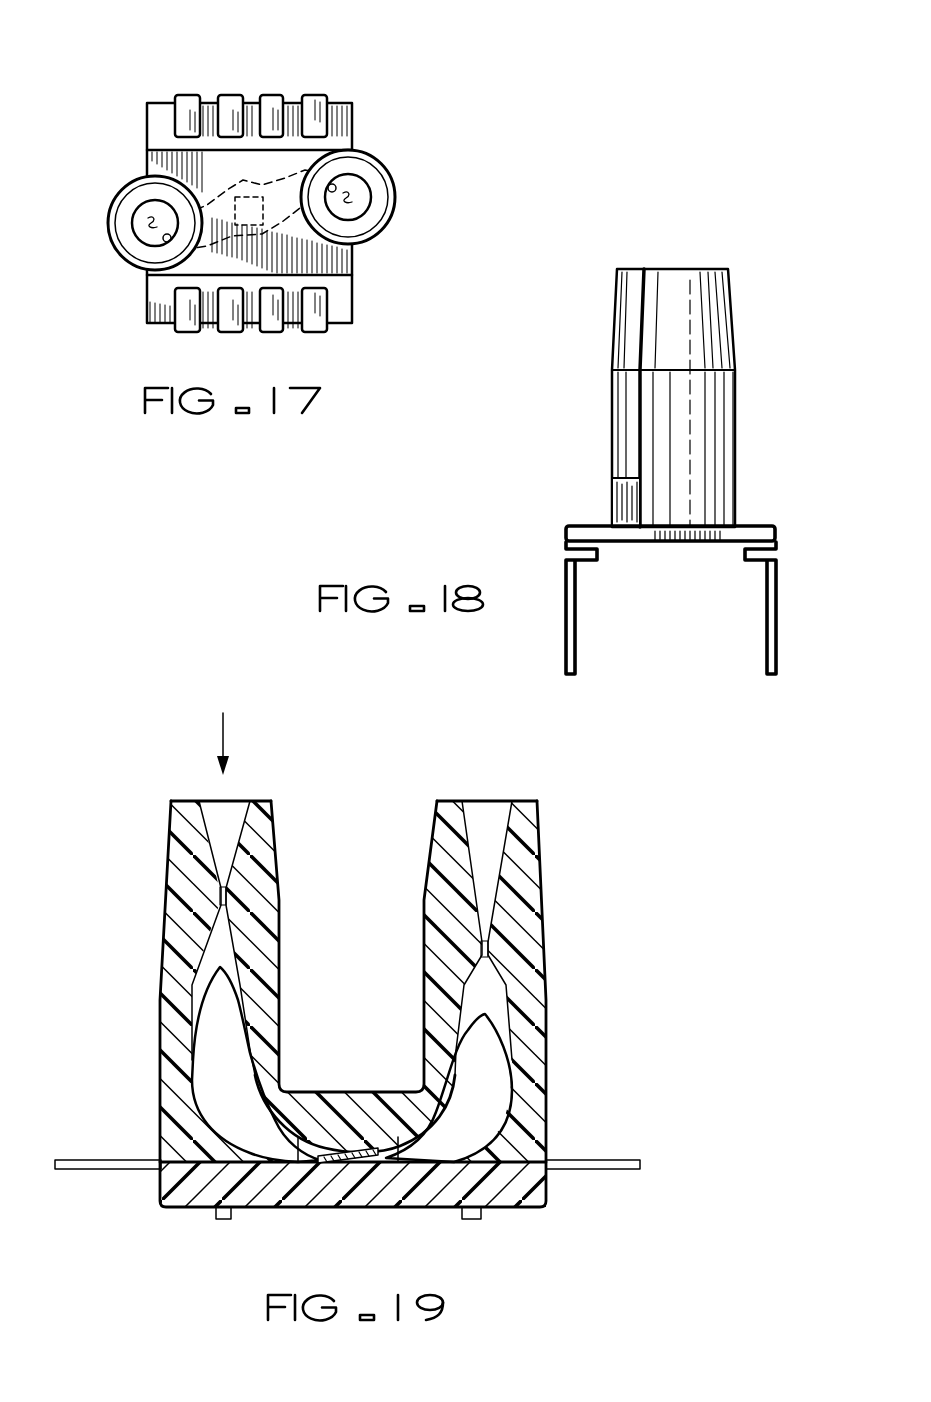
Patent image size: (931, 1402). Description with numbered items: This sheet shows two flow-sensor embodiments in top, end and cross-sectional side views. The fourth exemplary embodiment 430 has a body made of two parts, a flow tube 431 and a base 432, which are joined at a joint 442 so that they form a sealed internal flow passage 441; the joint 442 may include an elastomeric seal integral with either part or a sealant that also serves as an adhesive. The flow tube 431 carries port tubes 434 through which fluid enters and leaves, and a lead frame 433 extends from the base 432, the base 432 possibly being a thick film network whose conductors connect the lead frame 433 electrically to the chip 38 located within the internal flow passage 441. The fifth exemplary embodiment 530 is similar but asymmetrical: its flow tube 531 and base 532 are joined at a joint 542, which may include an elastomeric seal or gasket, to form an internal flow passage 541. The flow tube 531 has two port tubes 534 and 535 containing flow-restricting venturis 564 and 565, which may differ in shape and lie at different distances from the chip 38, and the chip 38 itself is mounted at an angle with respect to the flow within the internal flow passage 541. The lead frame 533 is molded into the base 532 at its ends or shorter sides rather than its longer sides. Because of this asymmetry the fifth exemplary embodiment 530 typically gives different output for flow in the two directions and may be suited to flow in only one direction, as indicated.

In FIG. 17, the fourth exemplary embodiment 430 is at (274, 184).
In FIG. 18, the fourth exemplary embodiment 430 is at (664, 489).
In FIG. 18, the flow tube 431 is at (612, 500).
In FIG. 18, the base 432 is at (692, 541).
In FIG. 17, the lead frame 433 is at (302, 98).
In FIG. 18, the lead frame 433 is at (563, 622).
In FIG. 17, the port tubes 434 is at (137, 190).
In FIG. 18, the port tubes 434 is at (730, 416).
In FIG. 17, the internal flow passage 441 is at (357, 200).
In FIG. 18, the joint 442 is at (654, 597).
In FIG. 19, the fifth exemplary embodiment 530 is at (357, 976).
In FIG. 19, the flow tube 531 is at (547, 994).
In FIG. 19, the base 532 is at (547, 1186).
In FIG. 19, the lead frame 533 is at (114, 1169).
In FIG. 19, the port tube 534 is at (280, 883).
In FIG. 19, the port tube 535 is at (545, 859).
In FIG. 19, the internal flow passage 541 is at (225, 1067).
In FIG. 19, the joint 542 is at (545, 1162).
In FIG. 19, the venturi 564 is at (218, 903).
In FIG. 19, the venturi 565 is at (482, 965).
In FIG. 19, the chip 38 is at (318, 1155).